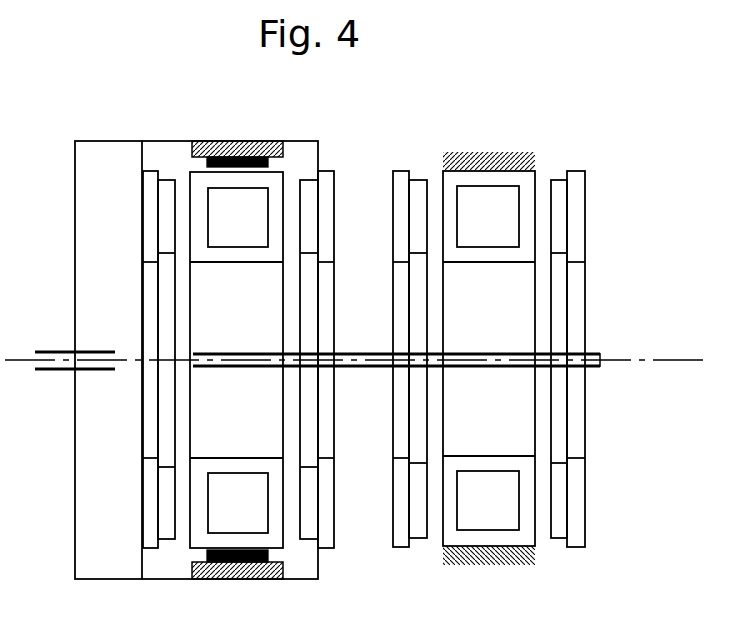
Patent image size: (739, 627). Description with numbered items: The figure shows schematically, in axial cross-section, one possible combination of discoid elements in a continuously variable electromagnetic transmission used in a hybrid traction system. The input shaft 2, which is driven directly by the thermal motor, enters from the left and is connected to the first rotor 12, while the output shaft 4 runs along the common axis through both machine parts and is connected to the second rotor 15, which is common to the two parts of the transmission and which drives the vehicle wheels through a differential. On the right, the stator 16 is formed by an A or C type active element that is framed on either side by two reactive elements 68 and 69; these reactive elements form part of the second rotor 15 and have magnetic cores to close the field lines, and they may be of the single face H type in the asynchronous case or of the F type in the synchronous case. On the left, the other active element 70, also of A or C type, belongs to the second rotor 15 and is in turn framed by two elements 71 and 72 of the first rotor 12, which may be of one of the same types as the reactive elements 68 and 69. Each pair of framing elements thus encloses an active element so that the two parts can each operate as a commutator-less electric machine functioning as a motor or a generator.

The input shaft 2 is at (52, 350).
The output shaft 4 is at (592, 352).
The first rotor 12 is at (160, 139).
The second rotor 15 is at (597, 236).
The stator 16 is at (488, 148).
The reactive element 68 is at (576, 196).
The reactive element 69 is at (400, 197).
The active element 70 is at (242, 182).
The element of first rotor 71 is at (323, 186).
The element of first rotor 72 is at (150, 197).